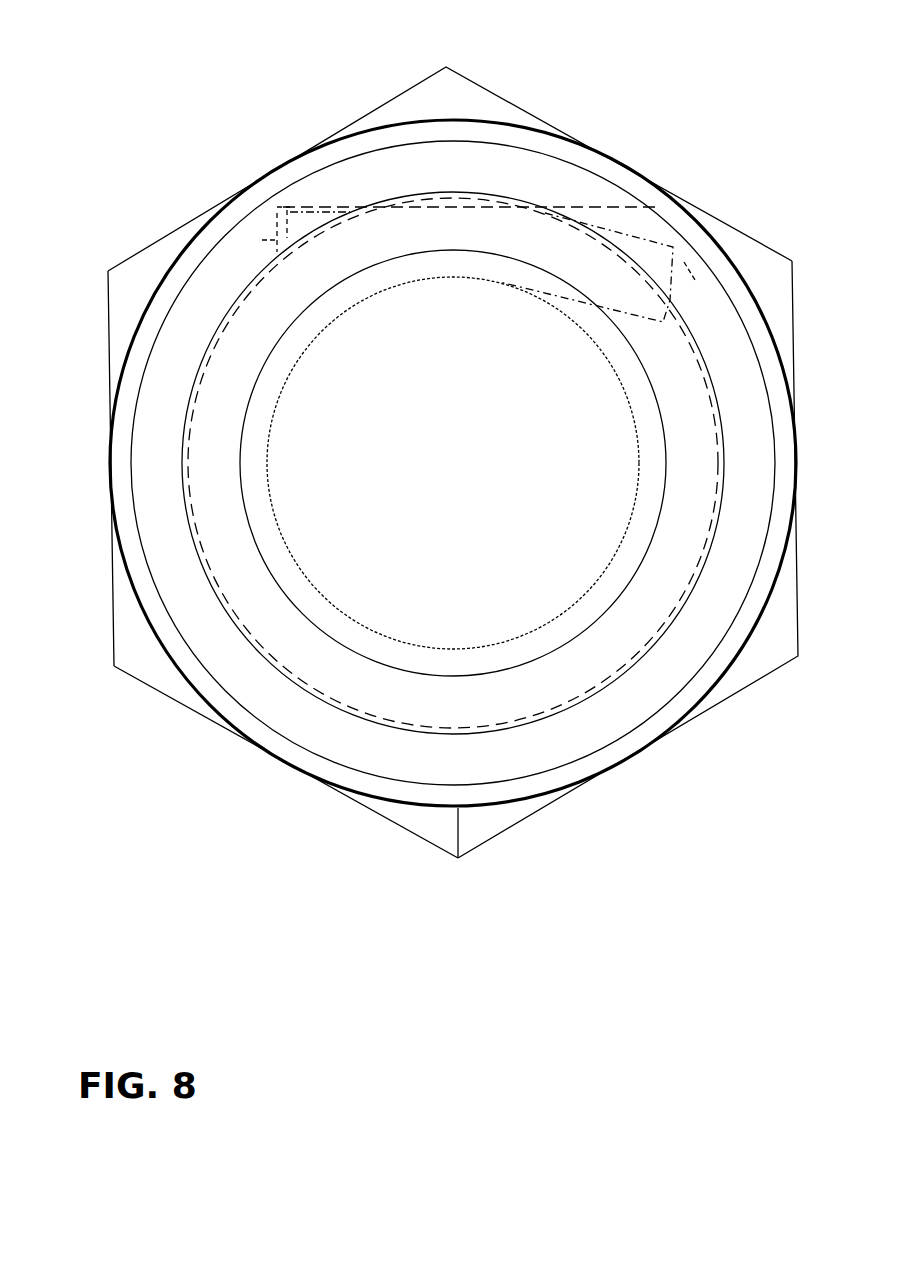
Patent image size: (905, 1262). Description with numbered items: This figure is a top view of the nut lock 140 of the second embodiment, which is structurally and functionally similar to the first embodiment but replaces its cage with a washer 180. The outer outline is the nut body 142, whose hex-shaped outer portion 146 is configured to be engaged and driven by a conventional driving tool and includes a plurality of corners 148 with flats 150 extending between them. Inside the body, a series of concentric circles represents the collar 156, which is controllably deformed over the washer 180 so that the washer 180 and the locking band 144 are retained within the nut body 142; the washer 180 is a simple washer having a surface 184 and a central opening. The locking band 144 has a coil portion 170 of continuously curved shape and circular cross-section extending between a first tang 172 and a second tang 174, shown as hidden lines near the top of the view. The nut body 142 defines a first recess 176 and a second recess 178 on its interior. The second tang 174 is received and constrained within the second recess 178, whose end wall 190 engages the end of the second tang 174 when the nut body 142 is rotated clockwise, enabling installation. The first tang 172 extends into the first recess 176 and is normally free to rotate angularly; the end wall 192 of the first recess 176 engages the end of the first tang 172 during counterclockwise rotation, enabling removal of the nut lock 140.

The nut lock 140 is at (100, 72).
The nut body 142 is at (509, 97).
The locking band 144 is at (383, 632).
The hex-shaped outer portion 146 is at (107, 303).
The corners 148 is at (446, 67).
The flats 150 is at (108, 463).
The collar 156 is at (172, 642).
The coil portion 170 is at (327, 703).
The first tang 172 is at (690, 245).
The second tang 174 is at (300, 200).
The first recess 176 is at (618, 210).
The second recess 178 is at (273, 204).
The washer 180 is at (597, 630).
The surface 184 is at (215, 537).
The end wall 190 is at (277, 240).
The end wall 192 is at (705, 273).